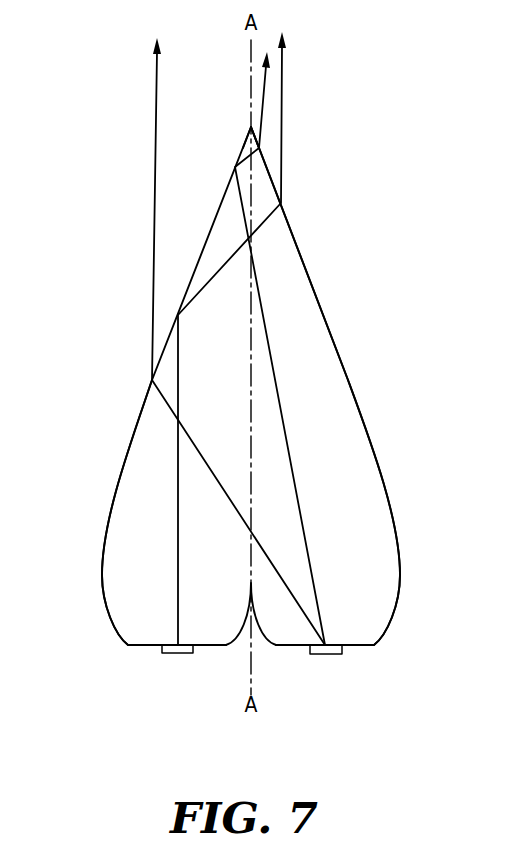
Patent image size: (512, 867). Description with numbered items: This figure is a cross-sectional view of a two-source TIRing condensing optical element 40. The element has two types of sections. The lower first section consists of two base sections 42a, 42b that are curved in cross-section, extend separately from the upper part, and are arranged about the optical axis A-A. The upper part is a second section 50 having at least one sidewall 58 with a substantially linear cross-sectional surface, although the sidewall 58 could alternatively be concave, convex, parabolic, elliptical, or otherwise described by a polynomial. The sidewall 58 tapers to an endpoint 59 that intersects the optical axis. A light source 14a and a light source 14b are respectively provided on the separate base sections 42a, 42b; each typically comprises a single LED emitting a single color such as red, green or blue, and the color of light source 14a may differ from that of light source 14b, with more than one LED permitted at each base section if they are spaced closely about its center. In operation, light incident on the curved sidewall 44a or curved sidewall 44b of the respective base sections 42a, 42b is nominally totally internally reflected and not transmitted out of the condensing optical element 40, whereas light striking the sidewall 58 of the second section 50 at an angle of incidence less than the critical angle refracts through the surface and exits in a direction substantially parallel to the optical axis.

The light source 14a is at (170, 651).
The light source 14b is at (330, 652).
The TIRing condensing optical element 40 is at (334, 519).
The base section 42a is at (91, 643).
The base section 42b is at (417, 643).
The curved sidewall 44a is at (102, 580).
The curved sidewall 44b is at (400, 580).
The second section 50 is at (392, 372).
The sidewall 58 is at (378, 447).
The endpoint 59 is at (248, 126).